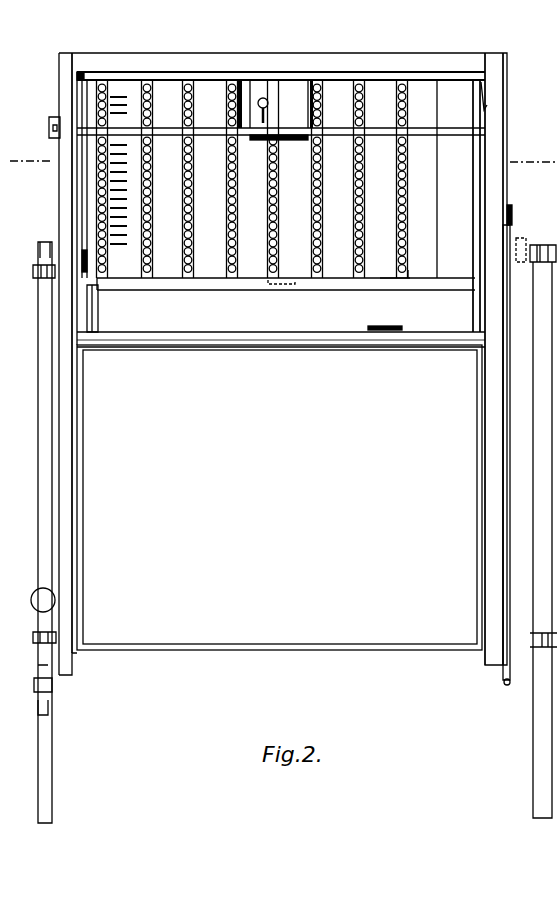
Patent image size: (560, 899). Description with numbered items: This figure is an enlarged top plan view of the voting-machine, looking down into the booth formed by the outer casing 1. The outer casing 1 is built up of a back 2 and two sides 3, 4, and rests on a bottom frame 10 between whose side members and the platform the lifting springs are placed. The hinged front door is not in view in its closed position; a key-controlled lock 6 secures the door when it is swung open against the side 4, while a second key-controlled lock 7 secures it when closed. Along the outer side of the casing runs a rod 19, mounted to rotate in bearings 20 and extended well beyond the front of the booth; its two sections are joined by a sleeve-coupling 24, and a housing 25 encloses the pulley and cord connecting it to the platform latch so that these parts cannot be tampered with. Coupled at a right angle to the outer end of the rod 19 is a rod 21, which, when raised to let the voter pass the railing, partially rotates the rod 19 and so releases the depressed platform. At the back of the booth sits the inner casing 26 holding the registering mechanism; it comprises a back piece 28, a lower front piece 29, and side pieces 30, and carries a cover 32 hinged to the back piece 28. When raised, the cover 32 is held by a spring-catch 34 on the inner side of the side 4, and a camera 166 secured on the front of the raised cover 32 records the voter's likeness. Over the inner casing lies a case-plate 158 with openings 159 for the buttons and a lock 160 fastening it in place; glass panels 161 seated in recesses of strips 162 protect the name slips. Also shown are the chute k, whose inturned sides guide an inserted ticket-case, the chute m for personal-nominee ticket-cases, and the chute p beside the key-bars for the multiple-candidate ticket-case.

The back 2 is at (398, 58).
The outer casing 1 is at (264, 208).
The side 3 is at (60, 359).
The side 4 is at (503, 190).
The key-controlled lock 6 is at (513, 212).
The key-controlled lock 7 is at (522, 240).
The bottom frame 10 is at (302, 645).
The rod 19 is at (40, 470).
The bearings 20 is at (34, 271).
The rod 21 is at (556, 328).
The sleeve-coupling 24 is at (34, 686).
The housing 25 is at (32, 602).
The casing 26 is at (281, 348).
The back piece 28 is at (33, 639).
The front piece 29 is at (345, 336).
The side pieces 30 is at (478, 313).
The cover 32 is at (76, 74).
The spring-catch 34 is at (484, 92).
The case-plate 158 is at (226, 282).
The openings 159 is at (409, 274).
The lock 160 is at (286, 282).
The panels 161 is at (267, 179).
The strips 162 is at (389, 282).
The camera 166 is at (274, 110).
The chute m is at (116, 95).
The chute p is at (78, 258).
The chute k is at (388, 331).